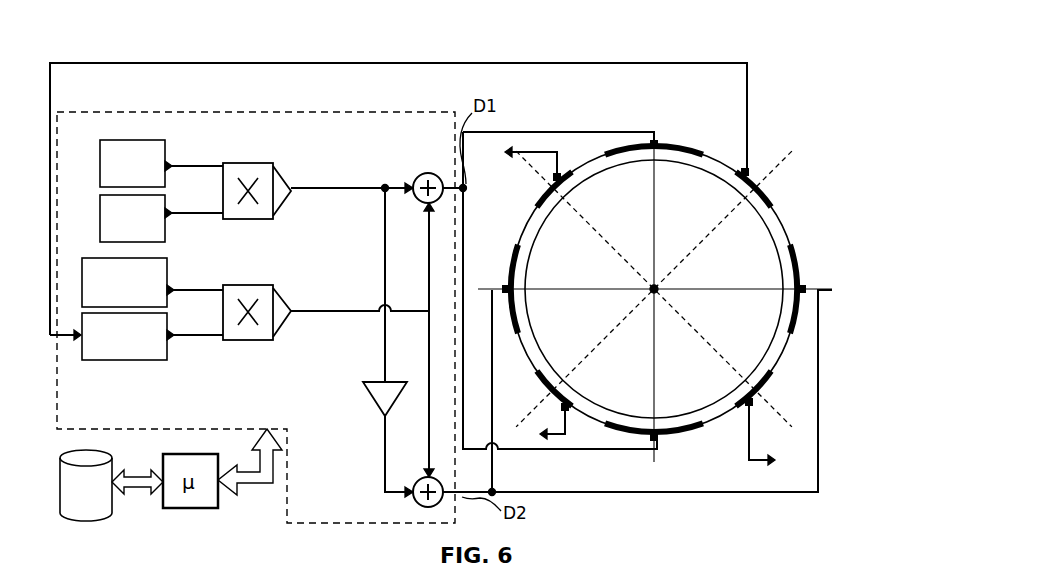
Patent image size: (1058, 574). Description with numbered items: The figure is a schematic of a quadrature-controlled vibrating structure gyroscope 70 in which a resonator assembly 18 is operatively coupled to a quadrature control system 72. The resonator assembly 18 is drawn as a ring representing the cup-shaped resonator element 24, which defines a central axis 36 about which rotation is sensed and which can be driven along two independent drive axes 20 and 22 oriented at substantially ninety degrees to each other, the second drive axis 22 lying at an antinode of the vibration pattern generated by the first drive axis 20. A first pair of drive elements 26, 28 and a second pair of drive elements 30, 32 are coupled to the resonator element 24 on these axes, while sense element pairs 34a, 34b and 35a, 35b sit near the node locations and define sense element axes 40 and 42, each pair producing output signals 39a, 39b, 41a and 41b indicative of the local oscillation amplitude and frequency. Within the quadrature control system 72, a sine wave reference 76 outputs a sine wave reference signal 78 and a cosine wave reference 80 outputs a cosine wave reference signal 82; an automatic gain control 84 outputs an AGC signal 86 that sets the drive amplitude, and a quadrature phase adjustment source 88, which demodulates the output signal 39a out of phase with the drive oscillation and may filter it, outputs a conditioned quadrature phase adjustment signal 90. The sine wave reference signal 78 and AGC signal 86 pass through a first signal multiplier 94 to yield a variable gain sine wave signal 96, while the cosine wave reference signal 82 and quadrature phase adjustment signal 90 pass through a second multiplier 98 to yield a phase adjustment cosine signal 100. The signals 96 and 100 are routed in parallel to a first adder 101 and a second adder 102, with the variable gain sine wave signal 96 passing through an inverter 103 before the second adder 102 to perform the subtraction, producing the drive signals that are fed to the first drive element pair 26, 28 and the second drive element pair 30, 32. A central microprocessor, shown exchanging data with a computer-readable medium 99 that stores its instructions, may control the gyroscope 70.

The resonator assembly 18 is at (797, 80).
The first drive axis 20 is at (583, 288).
The second drive axis 22 is at (654, 215).
The resonator element 24 is at (780, 225).
The drive element of first pair 26 is at (800, 265).
The drive element of first pair 28 is at (513, 262).
The drive element of second pair 30 is at (685, 148).
The drive element of second pair 32 is at (680, 435).
The sense element 34a is at (762, 192).
The sense element 34b is at (545, 387).
The sense element 35a is at (545, 200).
The sense element 35b is at (765, 385).
The central axis 36 is at (660, 289).
The output signal 39a is at (748, 148).
The output signal 39b is at (537, 424).
The sense element axis 40 is at (590, 352).
The output signal 41a is at (513, 161).
The output signal 41b is at (779, 437).
The sense element axis 42 is at (702, 332).
The quadrature-controlled vibrating structure gyroscope 70 is at (150, 43).
The quadrature control system 72 is at (296, 110).
The sine wave reference 76 is at (100, 175).
The sine wave reference signal 78 is at (187, 165).
The cosine wave reference 80 is at (82, 280).
The cosine wave reference signal 82 is at (185, 290).
The automatic gain control 84 is at (100, 225).
The AGC signal 86 is at (183, 215).
The quadrature phase adjustment source 88 is at (100, 360).
The quadrature phase adjustment signal 90 is at (190, 337).
The first signal multiplier 94 is at (294, 200).
The variable gain sine wave signal 96 is at (327, 187).
The second multiplier 98 is at (294, 322).
The computer-readable medium 99 is at (86, 485).
The phase adjustment cosine signal 100 is at (322, 310).
The first adder 101 is at (421, 175).
The second adder 102 is at (425, 507).
The inverter 103 is at (372, 395).